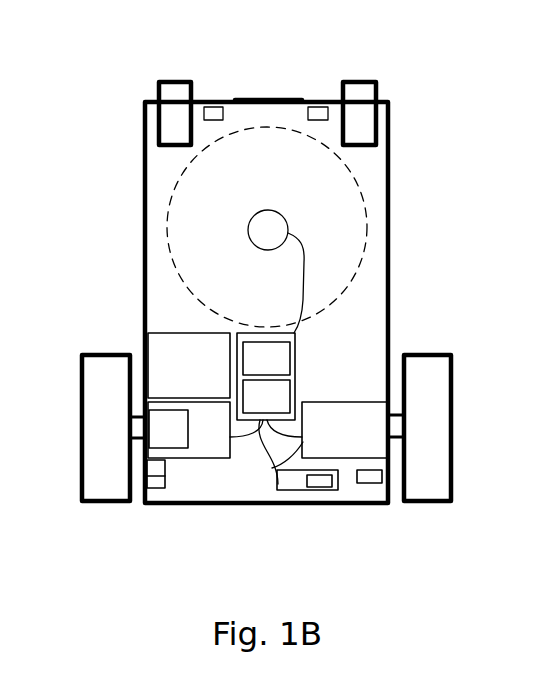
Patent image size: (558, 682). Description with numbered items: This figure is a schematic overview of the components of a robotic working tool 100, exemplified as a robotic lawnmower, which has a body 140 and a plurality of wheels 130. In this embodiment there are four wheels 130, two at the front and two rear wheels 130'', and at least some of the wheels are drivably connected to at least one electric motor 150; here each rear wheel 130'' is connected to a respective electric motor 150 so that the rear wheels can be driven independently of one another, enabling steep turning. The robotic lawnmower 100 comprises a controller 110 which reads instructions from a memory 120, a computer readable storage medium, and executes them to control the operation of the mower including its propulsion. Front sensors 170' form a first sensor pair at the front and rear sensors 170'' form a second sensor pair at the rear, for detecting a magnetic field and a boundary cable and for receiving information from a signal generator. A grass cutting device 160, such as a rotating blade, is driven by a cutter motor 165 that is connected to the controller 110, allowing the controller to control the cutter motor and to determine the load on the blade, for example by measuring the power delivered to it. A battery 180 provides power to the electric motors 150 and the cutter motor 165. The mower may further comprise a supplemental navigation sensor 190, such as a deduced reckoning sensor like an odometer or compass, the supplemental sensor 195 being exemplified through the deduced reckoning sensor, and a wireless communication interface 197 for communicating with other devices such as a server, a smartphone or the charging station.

The robotic working tool 100 is at (143, 147).
The controller 110 is at (297, 353).
The memory 120 is at (297, 395).
The wheels 130 is at (267, 72).
The rear wheels 130'' is at (228, 476).
The body 140 is at (163, 448).
The electric motor 150 is at (224, 442).
The grass cutting device 160 is at (176, 264).
The cutter motor 165 is at (248, 237).
The front sensors 170' is at (265, 55).
The rear sensors 170'' is at (249, 510).
The battery 180 is at (158, 357).
The supplemental navigation sensor 190 is at (305, 513).
The supplemental sensor 195 is at (167, 480).
The wireless communication interface 197 is at (357, 484).